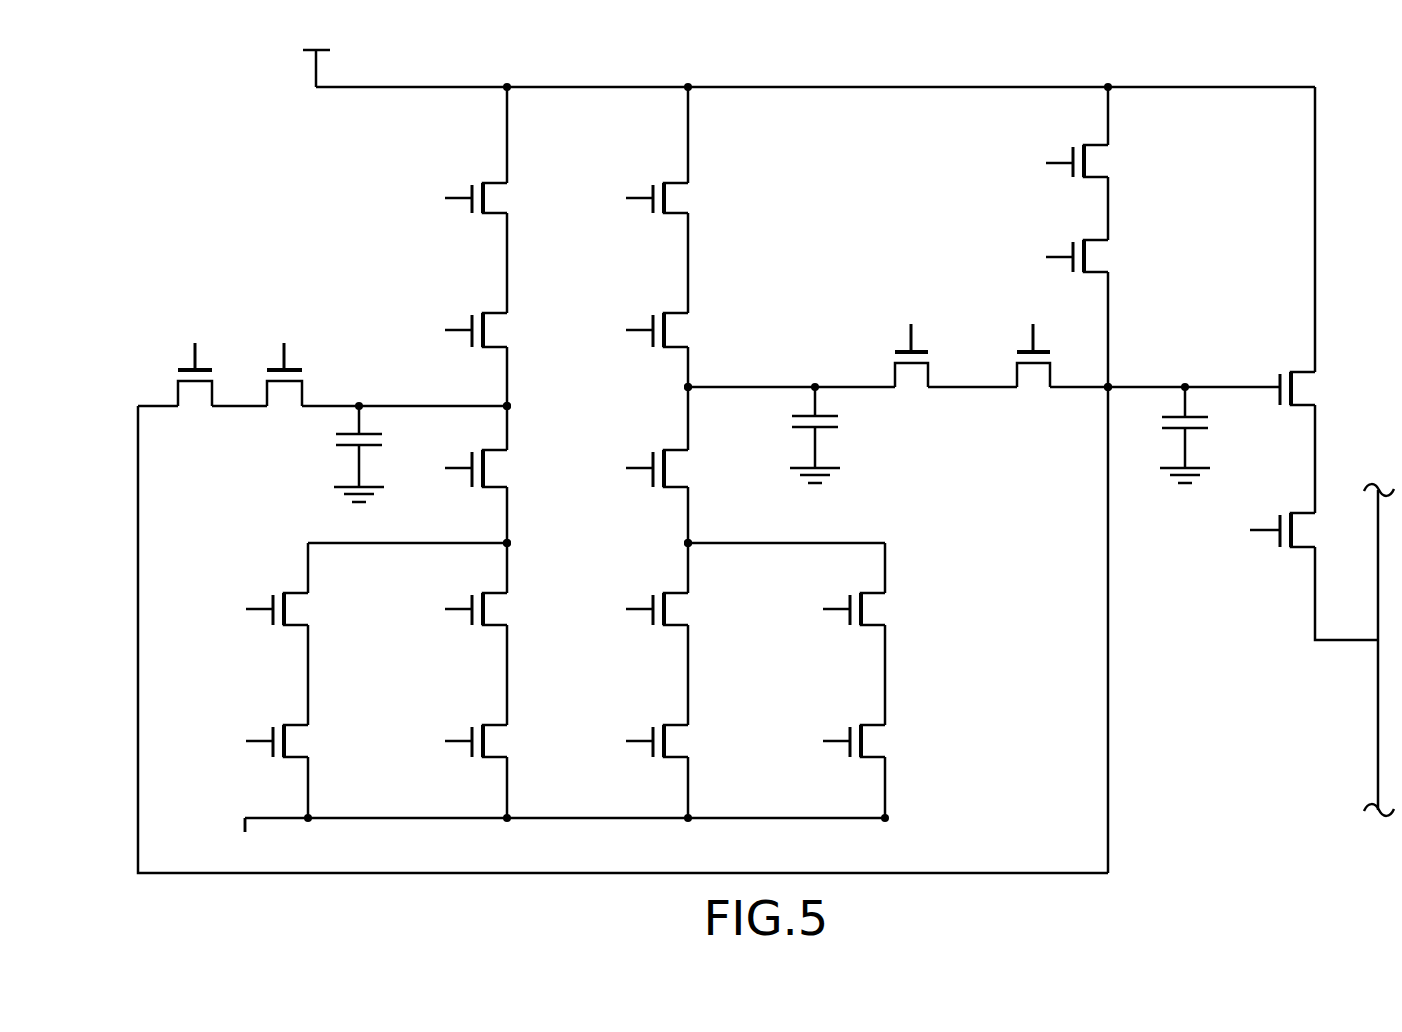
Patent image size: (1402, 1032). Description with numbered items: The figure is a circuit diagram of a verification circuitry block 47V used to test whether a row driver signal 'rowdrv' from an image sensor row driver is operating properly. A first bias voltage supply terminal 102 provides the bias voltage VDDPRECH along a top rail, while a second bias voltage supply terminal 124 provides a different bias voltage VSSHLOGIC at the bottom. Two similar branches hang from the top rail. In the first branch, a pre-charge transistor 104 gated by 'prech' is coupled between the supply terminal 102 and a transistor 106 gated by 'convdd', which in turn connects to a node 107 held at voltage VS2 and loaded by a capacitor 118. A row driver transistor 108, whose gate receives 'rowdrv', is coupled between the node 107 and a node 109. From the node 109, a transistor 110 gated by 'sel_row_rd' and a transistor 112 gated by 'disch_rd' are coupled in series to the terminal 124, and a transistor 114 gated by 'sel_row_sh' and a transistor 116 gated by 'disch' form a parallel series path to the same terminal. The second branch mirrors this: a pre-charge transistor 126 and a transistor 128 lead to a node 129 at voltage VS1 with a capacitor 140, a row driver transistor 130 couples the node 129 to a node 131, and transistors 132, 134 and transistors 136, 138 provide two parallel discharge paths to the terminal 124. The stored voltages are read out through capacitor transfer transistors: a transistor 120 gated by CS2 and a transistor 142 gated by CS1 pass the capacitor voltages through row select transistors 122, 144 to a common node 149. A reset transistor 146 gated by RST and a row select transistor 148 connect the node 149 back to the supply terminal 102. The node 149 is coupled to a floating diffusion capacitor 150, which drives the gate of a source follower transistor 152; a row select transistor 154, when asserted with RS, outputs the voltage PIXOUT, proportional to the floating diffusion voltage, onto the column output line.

The verification circuitry block 47V is at (283, 220).
The first bias voltage supply terminal 102 is at (316, 50).
The pre-charge transistor 104 is at (522, 194).
The pre-charge control transistor 106 is at (522, 326).
The node 107 is at (507, 406).
The row driver transistor 108 is at (522, 463).
The node 109 is at (507, 543).
The read phase select transistor 110 is at (513, 607).
The read phase discharge transistor 112 is at (513, 739).
The shutter phase select transistor 114 is at (312, 607).
The shutter phase discharge transistor 116 is at (312, 740).
The capacitor 118 is at (334, 452).
The capacitor transfer transistor 120 is at (291, 405).
The row select transistor 122 is at (194, 403).
The bias voltage supply terminal 124 is at (245, 818).
The pre-charge transistor 126 is at (695, 194).
The pre-charge control transistor 128 is at (695, 326).
The node 129 is at (688, 387).
The row driver transistor 130 is at (695, 463).
The node 131 is at (688, 543).
The read phase select transistor 132 is at (694, 607).
The read phase discharge transistor 134 is at (692, 742).
The shutter phase select transistor 136 is at (892, 608).
The shutter phase discharge transistor 138 is at (892, 741).
The capacitor 140 is at (849, 433).
The capacitor transfer transistor 142 is at (912, 393).
The row select transistor 144 is at (1033, 393).
The reset transistor 146 is at (1115, 165).
The row select transistor 148 is at (1115, 257).
The node 149 is at (1108, 387).
The floating diffusion capacitor 150 is at (1148, 443).
The source follower transistor 152 is at (1280, 356).
The row select transistor 154 is at (1280, 506).